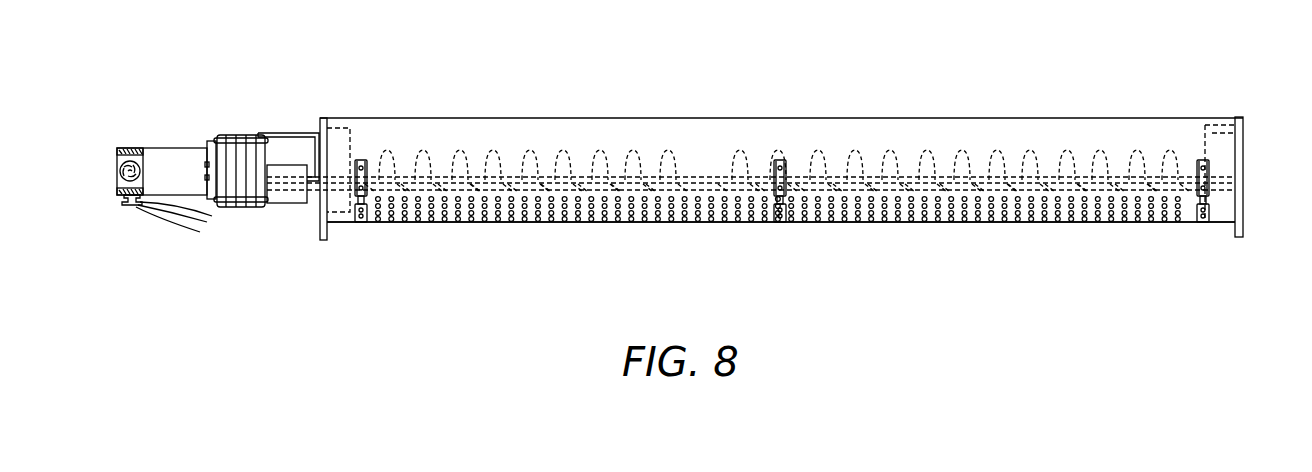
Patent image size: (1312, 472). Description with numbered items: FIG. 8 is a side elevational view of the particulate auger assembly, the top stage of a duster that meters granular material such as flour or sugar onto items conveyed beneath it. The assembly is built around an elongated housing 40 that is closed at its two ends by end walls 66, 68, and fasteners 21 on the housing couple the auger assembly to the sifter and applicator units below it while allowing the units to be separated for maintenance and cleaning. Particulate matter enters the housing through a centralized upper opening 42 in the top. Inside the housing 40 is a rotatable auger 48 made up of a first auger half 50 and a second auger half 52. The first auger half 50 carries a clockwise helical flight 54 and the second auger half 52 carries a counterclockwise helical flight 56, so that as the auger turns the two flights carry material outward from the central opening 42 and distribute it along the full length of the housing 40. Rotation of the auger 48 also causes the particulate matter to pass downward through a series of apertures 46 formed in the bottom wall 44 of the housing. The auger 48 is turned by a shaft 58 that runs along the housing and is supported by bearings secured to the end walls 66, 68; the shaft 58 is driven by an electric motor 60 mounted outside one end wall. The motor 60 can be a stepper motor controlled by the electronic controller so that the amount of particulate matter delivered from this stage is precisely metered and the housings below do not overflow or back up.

The fasteners 21 is at (787, 172).
The housing 40 is at (492, 129).
The centralized upper opening 42 is at (776, 104).
The bottom wall 44 is at (983, 222).
The apertures 46 is at (640, 222).
The rotatable auger 48 is at (700, 160).
The first auger half 50 is at (562, 152).
The second auger half 52 is at (998, 158).
The helical flight 54 is at (628, 155).
The helical flight 56 is at (1105, 155).
The shaft 58 is at (411, 178).
The electric motor 60 is at (167, 160).
The end wall 66 is at (320, 208).
The end wall 68 is at (1243, 197).